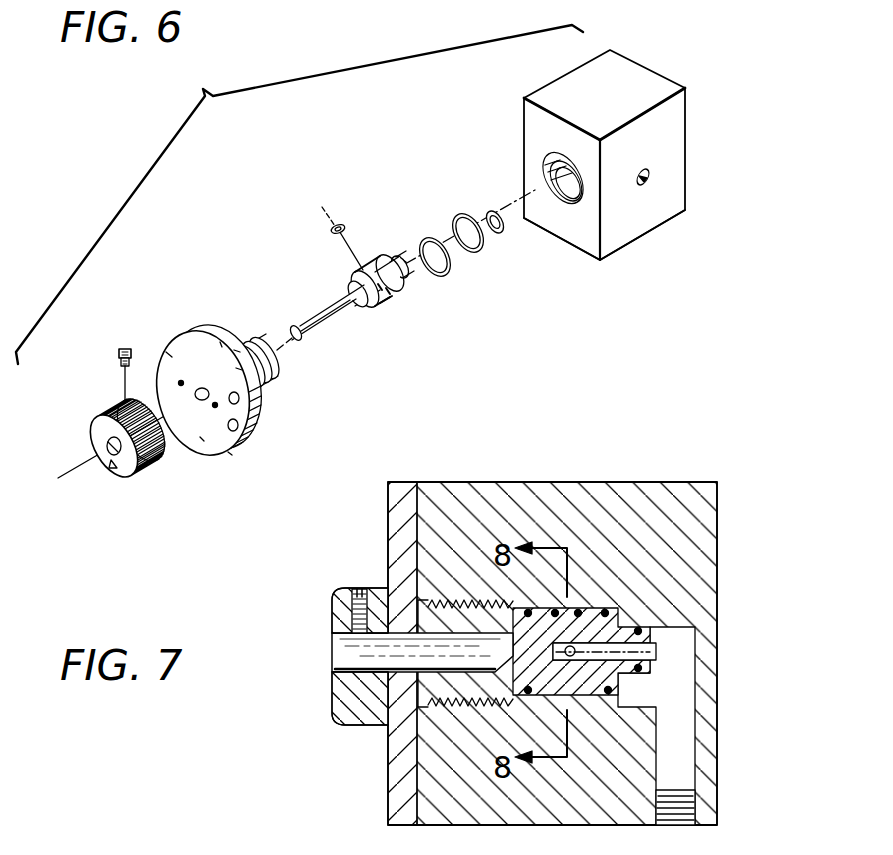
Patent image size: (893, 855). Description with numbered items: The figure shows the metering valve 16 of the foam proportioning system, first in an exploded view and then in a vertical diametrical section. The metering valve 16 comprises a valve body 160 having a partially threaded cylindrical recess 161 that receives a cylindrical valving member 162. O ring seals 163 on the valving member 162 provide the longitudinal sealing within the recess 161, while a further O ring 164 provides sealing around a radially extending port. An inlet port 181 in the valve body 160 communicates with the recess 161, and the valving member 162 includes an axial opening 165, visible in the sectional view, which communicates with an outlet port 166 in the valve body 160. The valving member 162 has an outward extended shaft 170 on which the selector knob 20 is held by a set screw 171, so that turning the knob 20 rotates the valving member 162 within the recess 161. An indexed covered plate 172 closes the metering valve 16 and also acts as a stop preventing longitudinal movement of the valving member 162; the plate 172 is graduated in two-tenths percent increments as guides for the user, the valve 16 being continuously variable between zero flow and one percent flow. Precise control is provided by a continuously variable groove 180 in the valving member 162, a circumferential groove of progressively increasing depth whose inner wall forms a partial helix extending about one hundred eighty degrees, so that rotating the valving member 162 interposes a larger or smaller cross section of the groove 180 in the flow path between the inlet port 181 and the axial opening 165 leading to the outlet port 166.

In FIG. 6, the metering valve 16 is at (614, 209).
In FIG. 7, the metering valve 16 is at (527, 482).
In FIG. 6, the selector knob 20 is at (128, 438).
In FIG. 7, the selector knob 20 is at (330, 609).
In FIG. 6, the valve body 160 is at (635, 73).
In FIG. 7, the valve body 160 is at (660, 482).
In FIG. 6, the partially threaded cylindrical recess 161 is at (545, 175).
In FIG. 7, the partially threaded cylindrical recess 161 is at (594, 606).
In FIG. 6, the cylindrical valving member 162 is at (370, 263).
In FIG. 7, the cylindrical valving member 162 is at (539, 653).
In FIG. 6, the O ring seals 163 is at (497, 228).
In FIG. 7, the O ring seals 163 is at (640, 626).
In FIG. 6, the O ring 164 is at (337, 225).
In FIG. 7, the axial opening 165 is at (655, 653).
In FIG. 7, the outlet port 166 is at (678, 683).
In FIG. 6, the outward extended shaft 170 is at (323, 310).
In FIG. 7, the outward extended shaft 170 is at (446, 650).
In FIG. 6, the set screw 171 is at (118, 350).
In FIG. 7, the set screw 171 is at (333, 596).
In FIG. 6, the indexed covered plate 172 is at (214, 390).
In FIG. 7, the indexed covered plate 172 is at (400, 482).
In FIG. 6, the continuously variable groove 180 is at (393, 303).
In FIG. 6, the inlet port 181 is at (652, 178).